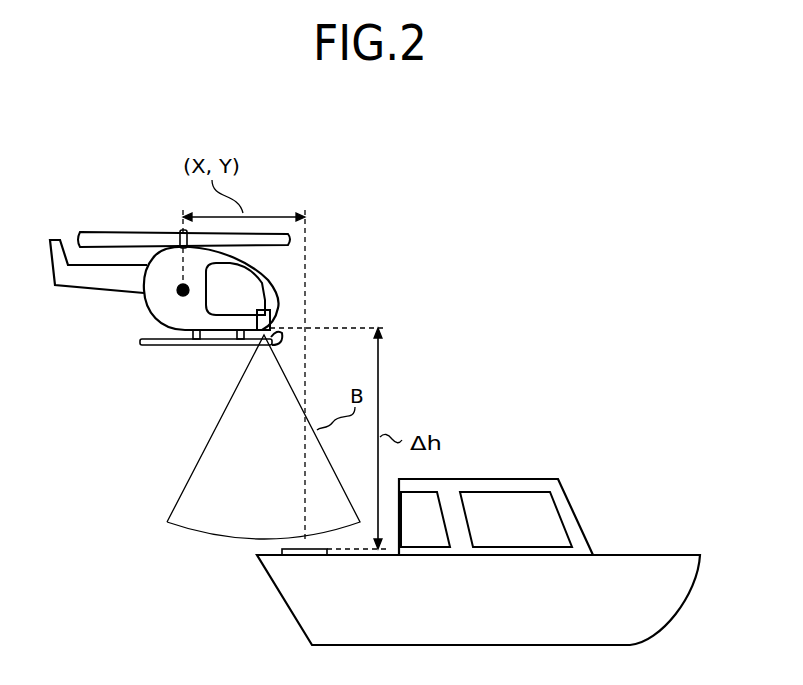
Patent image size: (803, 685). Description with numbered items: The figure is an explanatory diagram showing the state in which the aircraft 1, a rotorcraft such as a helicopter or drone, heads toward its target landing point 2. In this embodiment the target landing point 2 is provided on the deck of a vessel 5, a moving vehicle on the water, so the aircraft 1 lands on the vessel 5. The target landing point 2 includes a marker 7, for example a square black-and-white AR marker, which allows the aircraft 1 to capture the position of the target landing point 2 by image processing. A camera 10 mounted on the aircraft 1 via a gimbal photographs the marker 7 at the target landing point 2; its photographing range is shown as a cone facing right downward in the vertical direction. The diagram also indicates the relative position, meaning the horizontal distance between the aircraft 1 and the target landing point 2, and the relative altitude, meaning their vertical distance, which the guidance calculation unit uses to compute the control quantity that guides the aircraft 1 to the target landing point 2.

The aircraft 1 is at (265, 184).
The camera 10 is at (268, 309).
The vessel 5 is at (649, 471).
The target landing point 2 is at (222, 553).
The marker 7 is at (287, 549).